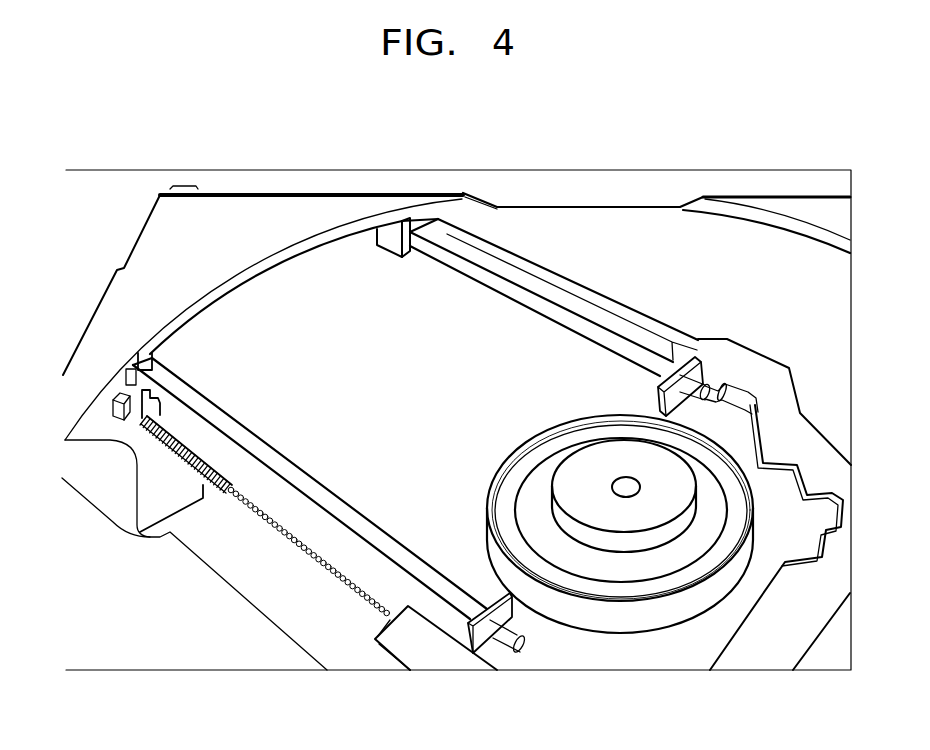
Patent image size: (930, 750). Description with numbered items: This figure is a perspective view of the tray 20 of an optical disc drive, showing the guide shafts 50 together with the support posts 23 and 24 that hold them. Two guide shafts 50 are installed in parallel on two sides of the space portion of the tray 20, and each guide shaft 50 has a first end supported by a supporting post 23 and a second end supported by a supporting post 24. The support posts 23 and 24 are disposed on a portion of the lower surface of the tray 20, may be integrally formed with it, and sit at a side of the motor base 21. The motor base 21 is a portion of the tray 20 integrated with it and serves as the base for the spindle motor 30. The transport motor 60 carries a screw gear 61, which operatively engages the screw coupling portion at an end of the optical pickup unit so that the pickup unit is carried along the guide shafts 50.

The tray 20 is at (284, 202).
The motor base 21 is at (767, 544).
The supporting post 23 is at (388, 262).
The supporting post 24 is at (658, 396).
The spindle motor 30 is at (532, 495).
The guide shaft 50 is at (555, 323).
The transport motor 60 is at (428, 657).
The screw gear 61 is at (188, 448).